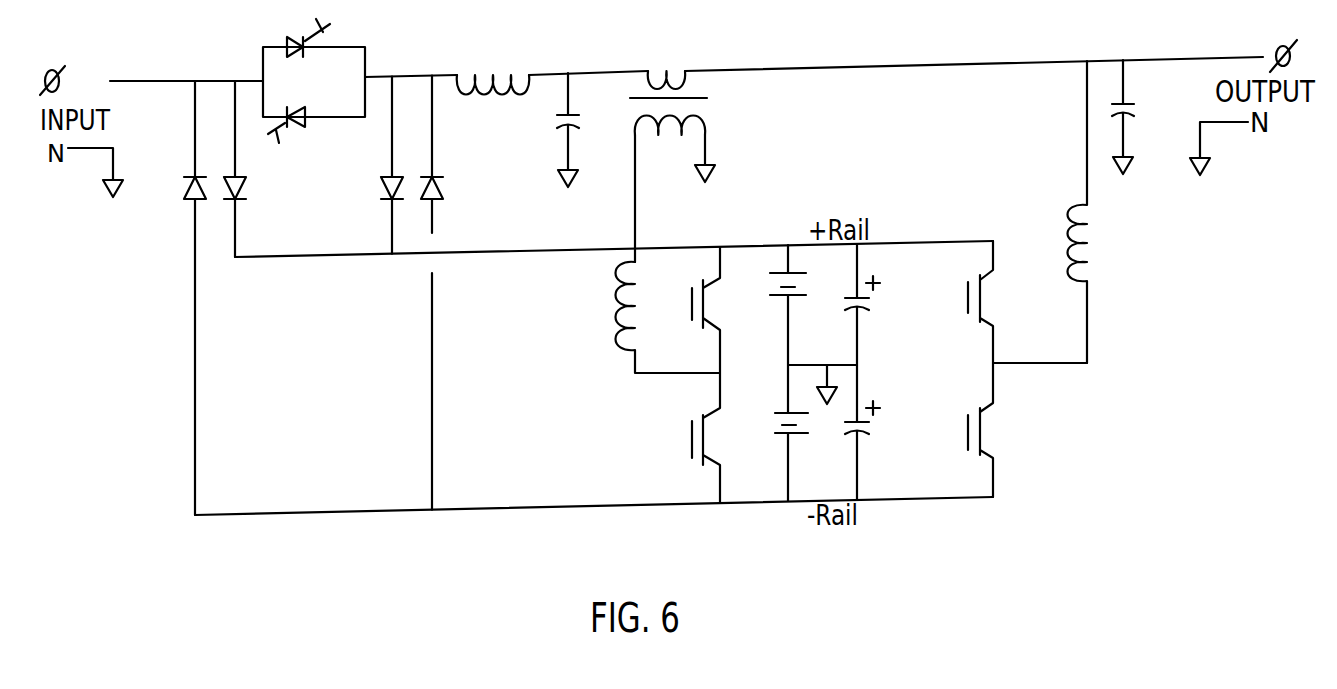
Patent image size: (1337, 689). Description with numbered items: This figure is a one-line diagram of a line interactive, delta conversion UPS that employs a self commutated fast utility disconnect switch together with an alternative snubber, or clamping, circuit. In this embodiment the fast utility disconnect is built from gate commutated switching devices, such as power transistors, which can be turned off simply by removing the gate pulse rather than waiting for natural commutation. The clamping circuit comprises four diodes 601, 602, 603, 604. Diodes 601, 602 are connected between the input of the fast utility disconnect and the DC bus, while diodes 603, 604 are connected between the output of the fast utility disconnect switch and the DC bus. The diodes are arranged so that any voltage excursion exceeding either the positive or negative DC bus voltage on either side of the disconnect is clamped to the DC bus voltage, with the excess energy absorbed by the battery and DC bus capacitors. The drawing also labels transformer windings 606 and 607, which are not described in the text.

The diode 601 is at (169, 298).
The diode 602 is at (264, 169).
The diode 603 is at (366, 165).
The diode 604 is at (456, 293).
The transformer primary winding 606 is at (695, 92).
The transformer secondary winding 607 is at (682, 166).